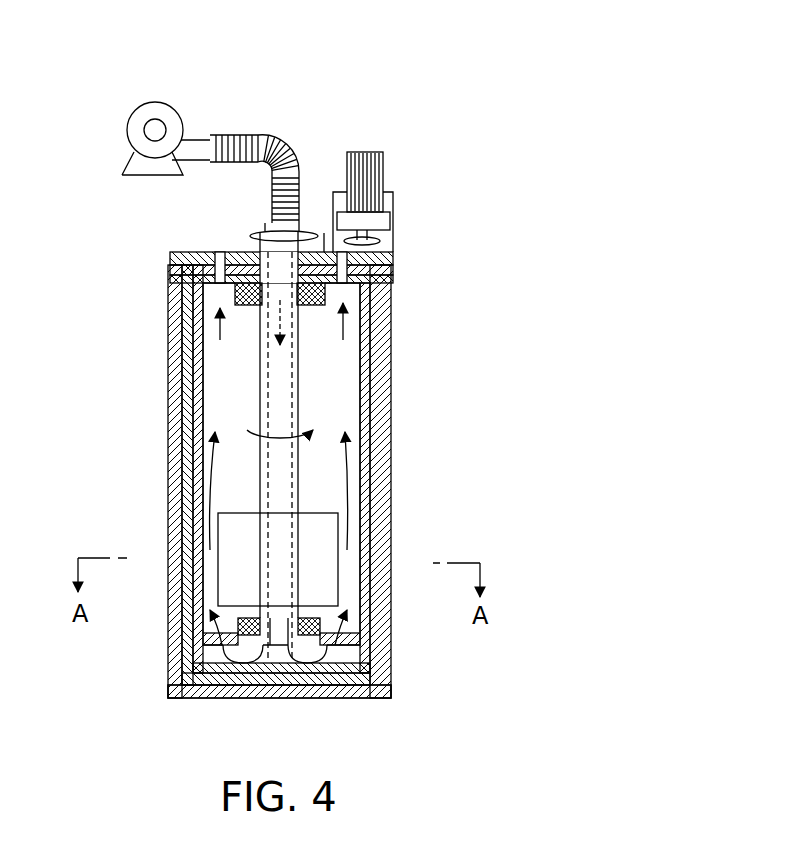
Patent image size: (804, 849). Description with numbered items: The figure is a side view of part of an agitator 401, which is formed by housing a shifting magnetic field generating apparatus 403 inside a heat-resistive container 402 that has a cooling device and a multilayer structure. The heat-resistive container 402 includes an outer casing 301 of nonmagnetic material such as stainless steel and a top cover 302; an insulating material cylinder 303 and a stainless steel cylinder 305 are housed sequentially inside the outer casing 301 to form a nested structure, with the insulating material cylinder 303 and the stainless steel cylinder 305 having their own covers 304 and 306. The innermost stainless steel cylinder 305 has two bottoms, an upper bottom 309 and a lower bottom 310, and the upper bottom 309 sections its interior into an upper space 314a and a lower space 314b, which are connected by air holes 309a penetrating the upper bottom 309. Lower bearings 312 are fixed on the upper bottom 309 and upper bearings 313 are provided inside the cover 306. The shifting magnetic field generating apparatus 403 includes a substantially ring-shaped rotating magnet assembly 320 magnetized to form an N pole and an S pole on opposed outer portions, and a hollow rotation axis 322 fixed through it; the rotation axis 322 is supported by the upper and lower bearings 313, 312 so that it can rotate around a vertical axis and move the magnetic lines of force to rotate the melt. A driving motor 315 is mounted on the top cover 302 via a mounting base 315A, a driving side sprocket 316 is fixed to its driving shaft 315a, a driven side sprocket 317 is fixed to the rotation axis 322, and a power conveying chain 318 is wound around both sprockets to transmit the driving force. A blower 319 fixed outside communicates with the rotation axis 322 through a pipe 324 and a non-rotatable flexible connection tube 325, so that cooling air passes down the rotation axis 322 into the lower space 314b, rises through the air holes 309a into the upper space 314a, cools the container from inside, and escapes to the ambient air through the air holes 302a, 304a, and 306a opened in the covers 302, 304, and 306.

The outer casing 301 is at (392, 382).
The top cover 302 is at (195, 260).
The air hole 302a is at (357, 268).
The insulating material cylinder 303 is at (392, 409).
The cover 304 is at (205, 268).
The air hole 304a is at (363, 280).
The stainless steel cylinder 305 is at (381, 466).
The cover 306 is at (210, 278).
The air hole 306a is at (378, 290).
The upper bottom 309 is at (357, 665).
The air holes 309a is at (200, 659).
The lower bottom 310 is at (383, 690).
The lower bearings 312 is at (323, 633).
The upper bearings 313 is at (307, 297).
The upper space 314a is at (230, 407).
The lower space 314b is at (223, 668).
The driving motor 315 is at (378, 170).
The mounting base 315A is at (393, 205).
The driving shaft 315a is at (375, 231).
The driving side sprocket 316 is at (368, 245).
The driven side sprocket 317 is at (287, 243).
The power conveying chain 318 is at (324, 250).
The blower 319 is at (133, 127).
The rotating magnet assembly 320 is at (327, 530).
The hollow rotation axis 322 is at (260, 372).
The pipe 324 is at (206, 138).
The flexible connection tube 325 is at (284, 166).
The agitator 401 is at (350, 97).
The heat-resistive container 402 is at (514, 401).
The shifting magnetic field generating apparatus 403 is at (205, 560).